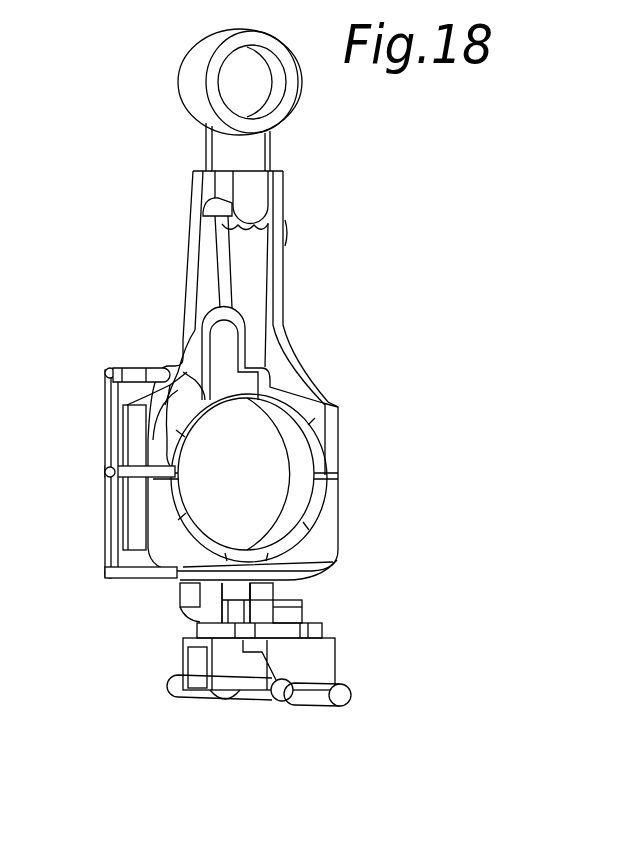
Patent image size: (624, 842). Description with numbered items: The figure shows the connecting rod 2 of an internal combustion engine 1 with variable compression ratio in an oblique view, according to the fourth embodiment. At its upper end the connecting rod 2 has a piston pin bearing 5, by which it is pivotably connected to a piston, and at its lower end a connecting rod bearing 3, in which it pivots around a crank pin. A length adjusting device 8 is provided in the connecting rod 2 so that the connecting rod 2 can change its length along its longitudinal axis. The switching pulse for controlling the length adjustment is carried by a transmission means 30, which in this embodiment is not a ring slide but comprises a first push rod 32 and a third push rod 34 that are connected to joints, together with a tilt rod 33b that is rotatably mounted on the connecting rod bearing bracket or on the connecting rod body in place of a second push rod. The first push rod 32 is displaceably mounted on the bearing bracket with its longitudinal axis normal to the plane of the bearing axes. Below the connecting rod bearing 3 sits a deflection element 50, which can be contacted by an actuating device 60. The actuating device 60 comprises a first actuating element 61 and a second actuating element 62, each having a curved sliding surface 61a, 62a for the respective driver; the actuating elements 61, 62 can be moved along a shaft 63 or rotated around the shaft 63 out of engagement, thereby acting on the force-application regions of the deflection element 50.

The internal combustion engine 1 is at (160, 213).
The connecting rod 2 is at (328, 325).
The connecting rod bearing 3 is at (277, 530).
The piston pin bearing 5 is at (273, 85).
The length adjusting device 8 is at (279, 172).
The transmission means 30 is at (102, 357).
The first push rod 32 is at (130, 580).
The tilt rod 33b is at (118, 433).
The third push rod 34 is at (155, 373).
The deflection element 50 is at (258, 603).
The actuating device 60 is at (162, 678).
The first actuating element 61 is at (287, 618).
The curved sliding surface 61a is at (302, 604).
The second actuating element 62 is at (234, 625).
The curved sliding surface 62a is at (223, 610).
The shaft 63 is at (255, 694).